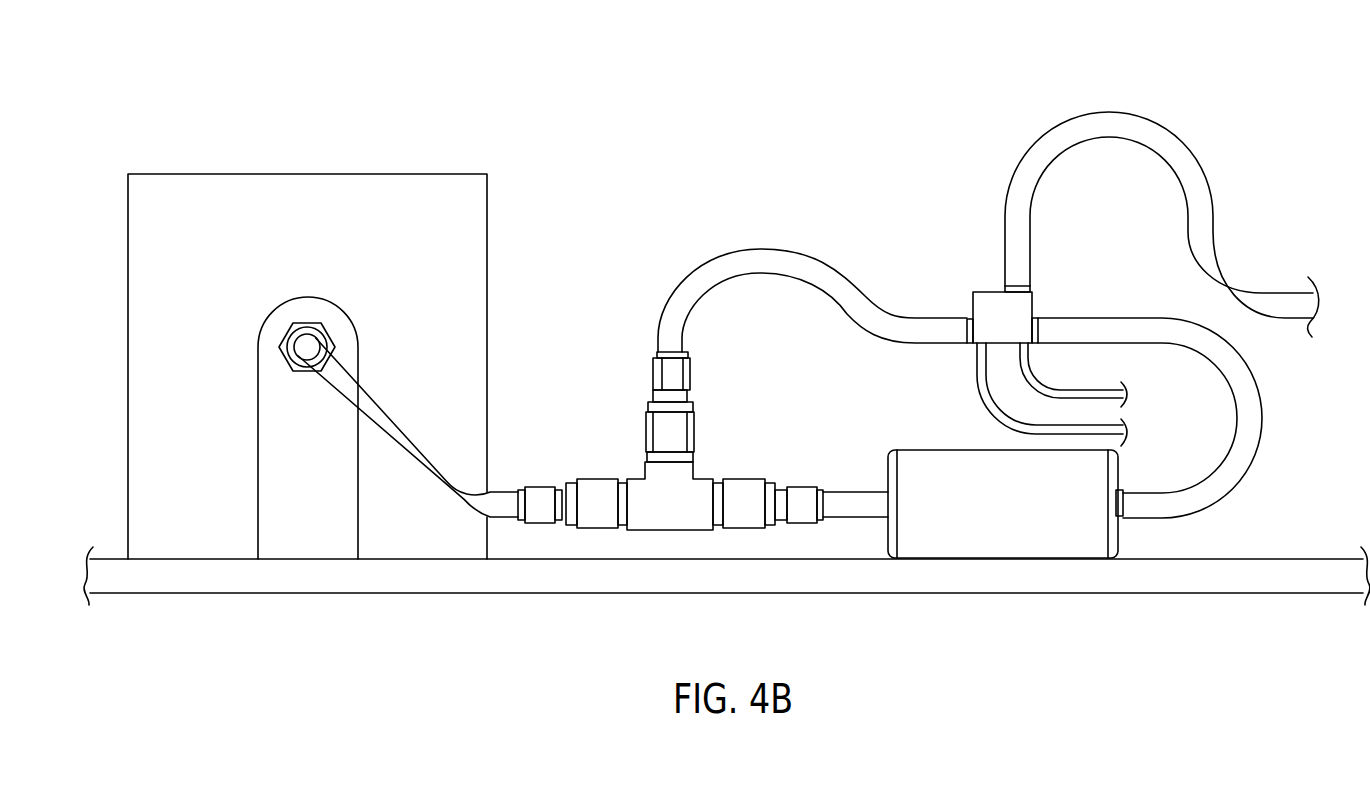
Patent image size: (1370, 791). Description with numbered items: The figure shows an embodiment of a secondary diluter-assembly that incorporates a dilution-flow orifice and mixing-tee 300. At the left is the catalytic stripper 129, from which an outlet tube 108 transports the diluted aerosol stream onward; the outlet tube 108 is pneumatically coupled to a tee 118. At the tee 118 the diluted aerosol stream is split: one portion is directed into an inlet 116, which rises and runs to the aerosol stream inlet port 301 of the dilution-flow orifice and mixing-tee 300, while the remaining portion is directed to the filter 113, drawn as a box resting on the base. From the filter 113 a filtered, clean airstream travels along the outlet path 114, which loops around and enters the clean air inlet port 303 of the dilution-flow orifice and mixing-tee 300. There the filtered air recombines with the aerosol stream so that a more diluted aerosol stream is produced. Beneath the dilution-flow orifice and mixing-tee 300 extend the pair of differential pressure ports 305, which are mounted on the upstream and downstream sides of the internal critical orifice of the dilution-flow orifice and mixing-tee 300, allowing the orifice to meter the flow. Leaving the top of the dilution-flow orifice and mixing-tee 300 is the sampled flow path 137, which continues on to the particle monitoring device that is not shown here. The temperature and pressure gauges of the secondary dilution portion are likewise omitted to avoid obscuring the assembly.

The outlet tube 108 is at (380, 400).
The filter 113 is at (1000, 450).
The outlet path 114 is at (1262, 418).
The inlet 116 is at (762, 248).
The tee 118 is at (705, 476).
The catalytic stripper 129 is at (128, 364).
The sampled flow path 137 is at (1107, 113).
The dilution-flow orifice and mixing-tee 300 is at (985, 292).
The aerosol stream inlet port 301 is at (975, 345).
The clean air inlet port 303 is at (1033, 318).
The differential pressure ports 305 is at (1020, 346).